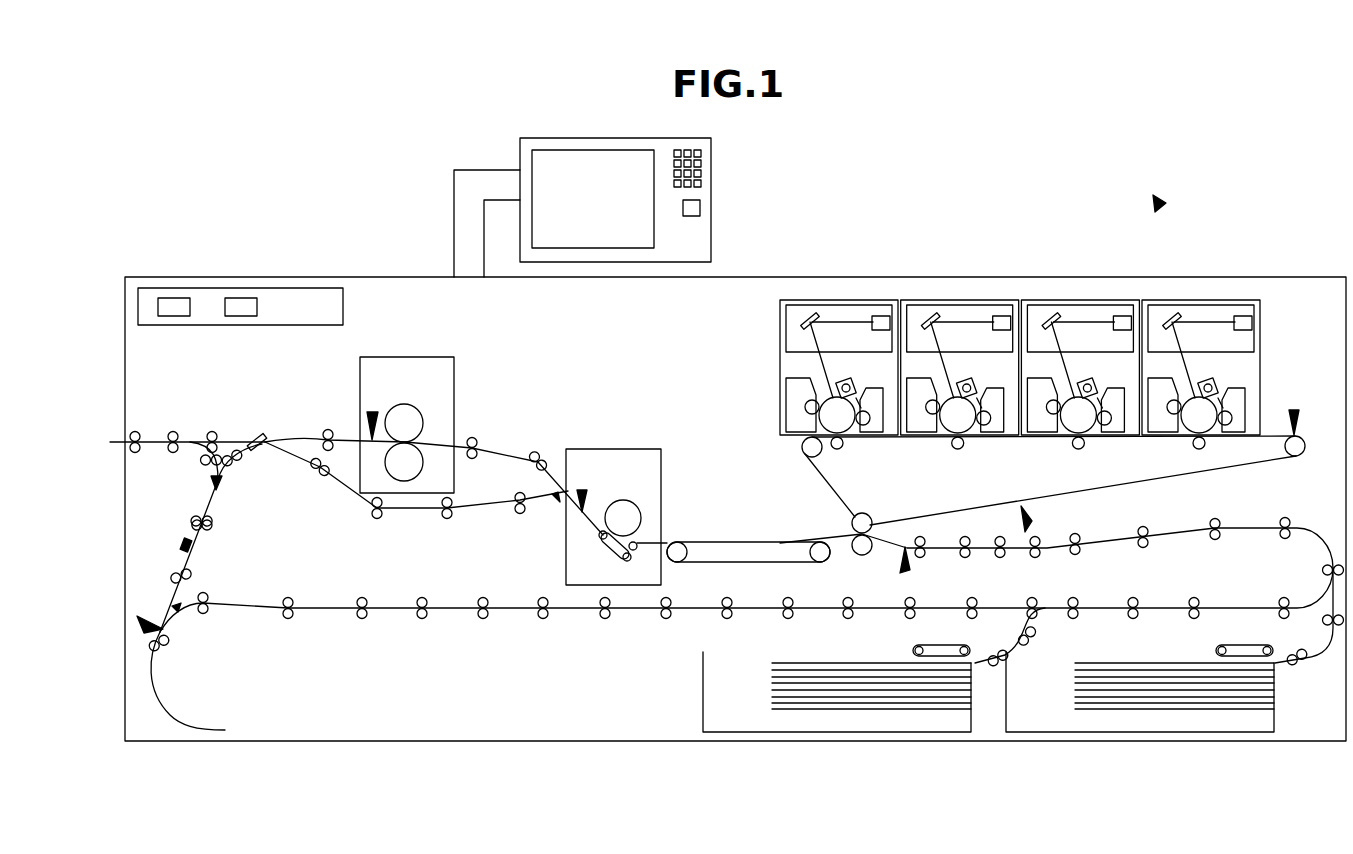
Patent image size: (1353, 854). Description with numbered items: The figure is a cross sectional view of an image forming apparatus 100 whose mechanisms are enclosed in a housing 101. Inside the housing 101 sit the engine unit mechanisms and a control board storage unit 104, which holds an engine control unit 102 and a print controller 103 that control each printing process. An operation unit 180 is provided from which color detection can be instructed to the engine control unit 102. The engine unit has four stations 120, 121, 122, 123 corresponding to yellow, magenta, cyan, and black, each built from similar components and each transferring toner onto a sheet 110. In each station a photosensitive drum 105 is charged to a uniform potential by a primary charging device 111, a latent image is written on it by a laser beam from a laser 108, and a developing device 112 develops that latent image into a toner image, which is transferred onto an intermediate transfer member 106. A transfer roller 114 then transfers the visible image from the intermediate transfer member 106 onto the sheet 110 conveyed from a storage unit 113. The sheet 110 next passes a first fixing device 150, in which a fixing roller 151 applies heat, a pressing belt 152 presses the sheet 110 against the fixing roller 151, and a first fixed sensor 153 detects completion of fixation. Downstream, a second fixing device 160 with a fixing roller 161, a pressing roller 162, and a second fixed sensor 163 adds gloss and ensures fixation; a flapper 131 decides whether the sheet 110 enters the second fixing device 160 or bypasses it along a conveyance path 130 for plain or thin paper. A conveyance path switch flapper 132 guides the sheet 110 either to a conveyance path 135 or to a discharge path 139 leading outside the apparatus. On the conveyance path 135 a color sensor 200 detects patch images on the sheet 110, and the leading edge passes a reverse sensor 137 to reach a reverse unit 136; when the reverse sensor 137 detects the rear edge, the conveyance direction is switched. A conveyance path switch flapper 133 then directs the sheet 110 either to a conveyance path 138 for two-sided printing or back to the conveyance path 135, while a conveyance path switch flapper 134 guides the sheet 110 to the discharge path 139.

The image forming apparatus 100 is at (1160, 200).
The housing 101 is at (1255, 277).
The engine control unit 102 is at (175, 298).
The print controller 103 is at (242, 298).
The control board storage unit 104 is at (305, 288).
The photosensitive drum 105 is at (848, 446).
The intermediate transfer member 106 is at (938, 520).
The laser 108 is at (882, 305).
The sheet 110 is at (812, 663).
The primary charging device 111 is at (835, 385).
The developing device 112 is at (795, 410).
The storage unit 113 is at (703, 692).
The transfer roller 114 is at (866, 556).
The station 120 is at (812, 347).
The station 121 is at (965, 300).
The station 122 is at (1085, 300).
The station 123 is at (1205, 300).
The conveyance path 130 is at (409, 512).
The flapper 131 is at (556, 500).
The conveyance path switch flapper 132 is at (252, 438).
The conveyance path switch flapper 133 is at (178, 622).
The conveyance path switch flapper 134 is at (230, 497).
The conveyance path 135 is at (205, 548).
The reverse unit 136 is at (190, 695).
The reverse sensor 137 is at (147, 617).
The conveyance path 138 is at (325, 607).
The discharge path 139 is at (152, 442).
The first fixing device 150 is at (637, 449).
The fixing roller 151 is at (624, 500).
The pressing belt 152 is at (612, 556).
The first fixed sensor 153 is at (582, 490).
The second fixing device 160 is at (392, 357).
The fixing roller 161 is at (412, 404).
The pressing roller 162 is at (423, 465).
The second fixed sensor 163 is at (370, 412).
The operation unit 180 is at (520, 150).
The color sensor 200 is at (182, 540).